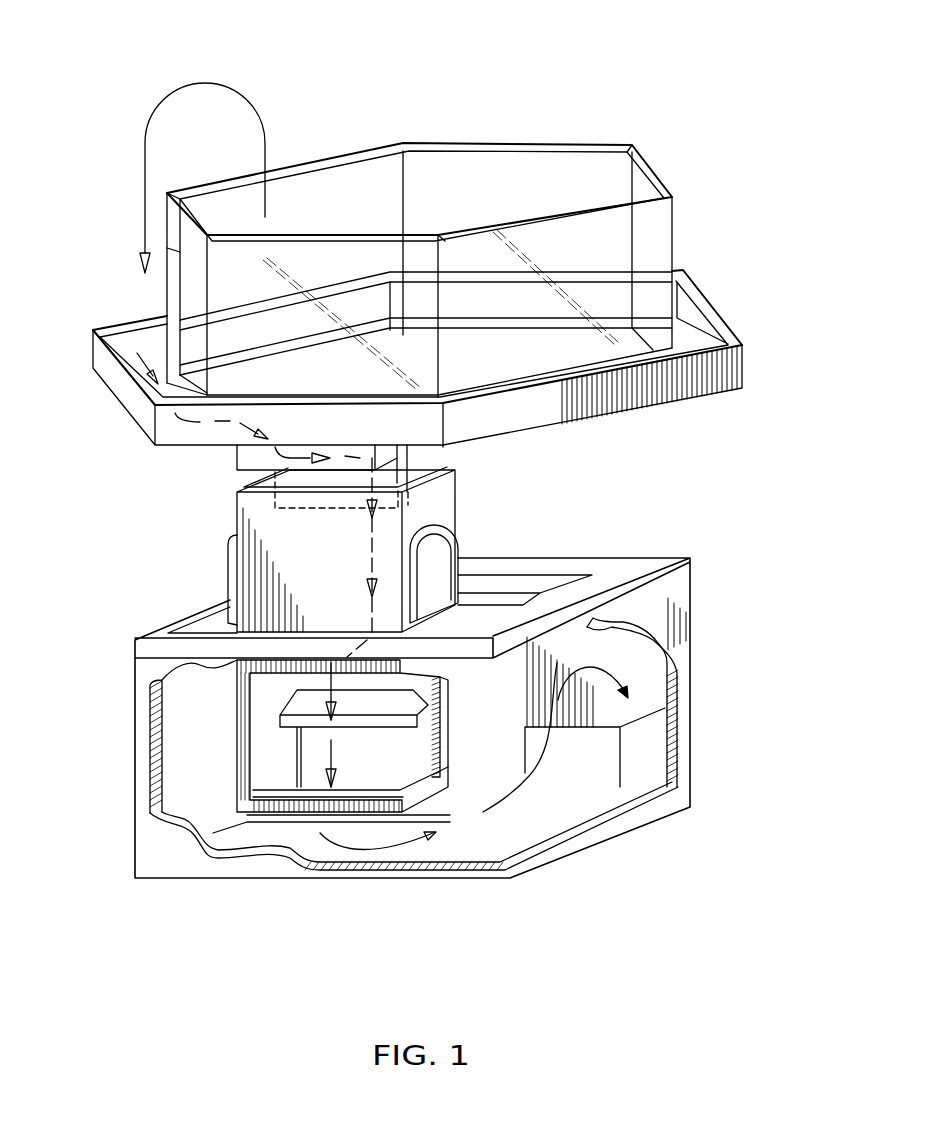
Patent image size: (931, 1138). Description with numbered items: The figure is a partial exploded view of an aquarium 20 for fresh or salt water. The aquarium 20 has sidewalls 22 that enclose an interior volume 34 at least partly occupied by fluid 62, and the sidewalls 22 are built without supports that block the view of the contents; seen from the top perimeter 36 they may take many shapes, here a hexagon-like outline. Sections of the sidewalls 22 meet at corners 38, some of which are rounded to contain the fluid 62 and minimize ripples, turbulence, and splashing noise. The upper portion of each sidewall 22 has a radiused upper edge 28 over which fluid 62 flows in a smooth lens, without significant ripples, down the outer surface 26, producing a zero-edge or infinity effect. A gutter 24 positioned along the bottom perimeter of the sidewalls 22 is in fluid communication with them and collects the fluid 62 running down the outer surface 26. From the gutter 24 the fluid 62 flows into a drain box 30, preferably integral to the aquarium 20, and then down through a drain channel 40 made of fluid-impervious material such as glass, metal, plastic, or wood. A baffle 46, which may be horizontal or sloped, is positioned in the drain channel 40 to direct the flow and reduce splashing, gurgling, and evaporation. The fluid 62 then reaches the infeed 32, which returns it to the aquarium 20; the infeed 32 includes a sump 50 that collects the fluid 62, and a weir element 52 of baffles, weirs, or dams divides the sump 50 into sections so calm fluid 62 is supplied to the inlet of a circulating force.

The aquarium 20 is at (407, 476).
The sidewalls 22 is at (423, 173).
The gutter 24 is at (120, 385).
The outer surface 26 is at (663, 258).
The radiused upper edge 28 is at (405, 143).
The drain box 30 is at (237, 457).
The infeed 32 is at (676, 834).
The interior volume 34 is at (347, 220).
The top perimeter 36 is at (635, 145).
The corners 38 is at (440, 234).
The drain channel 40 is at (237, 522).
The baffle 46 is at (302, 712).
The sump 50 is at (360, 878).
The weir element 52 is at (615, 777).
The fluid 62 is at (650, 765).